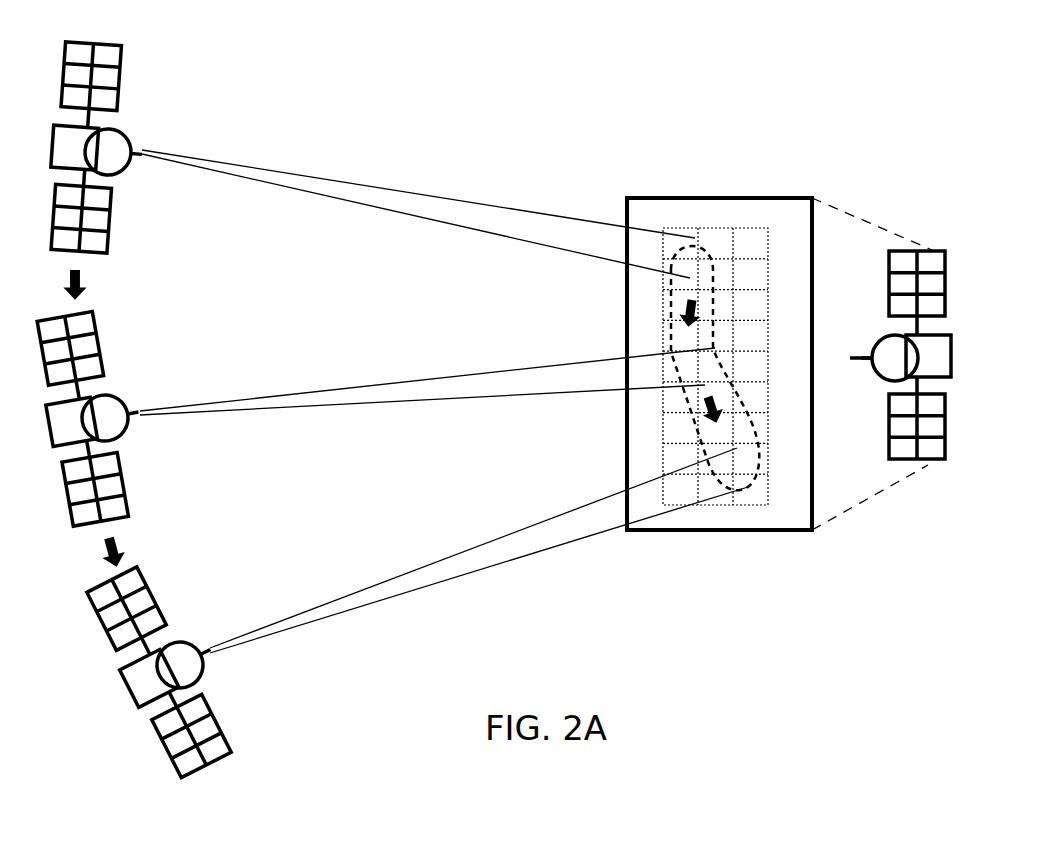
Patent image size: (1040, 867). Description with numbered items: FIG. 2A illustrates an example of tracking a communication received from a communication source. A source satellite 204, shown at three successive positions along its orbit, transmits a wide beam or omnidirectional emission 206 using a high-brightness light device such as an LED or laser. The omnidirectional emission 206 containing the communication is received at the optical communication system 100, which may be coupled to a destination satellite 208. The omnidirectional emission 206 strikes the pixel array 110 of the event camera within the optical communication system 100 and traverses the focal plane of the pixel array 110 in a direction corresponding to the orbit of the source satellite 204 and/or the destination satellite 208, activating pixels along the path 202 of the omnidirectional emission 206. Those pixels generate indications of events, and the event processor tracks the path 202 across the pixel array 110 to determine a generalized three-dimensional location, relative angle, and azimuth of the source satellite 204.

The optical communication system 100 is at (723, 197).
The pixel array 110 is at (768, 273).
The path 202 is at (687, 307).
The source satellite 204 is at (127, 131).
The omnidirectional emission 206 is at (441, 200).
The destination satellite 208 is at (883, 380).